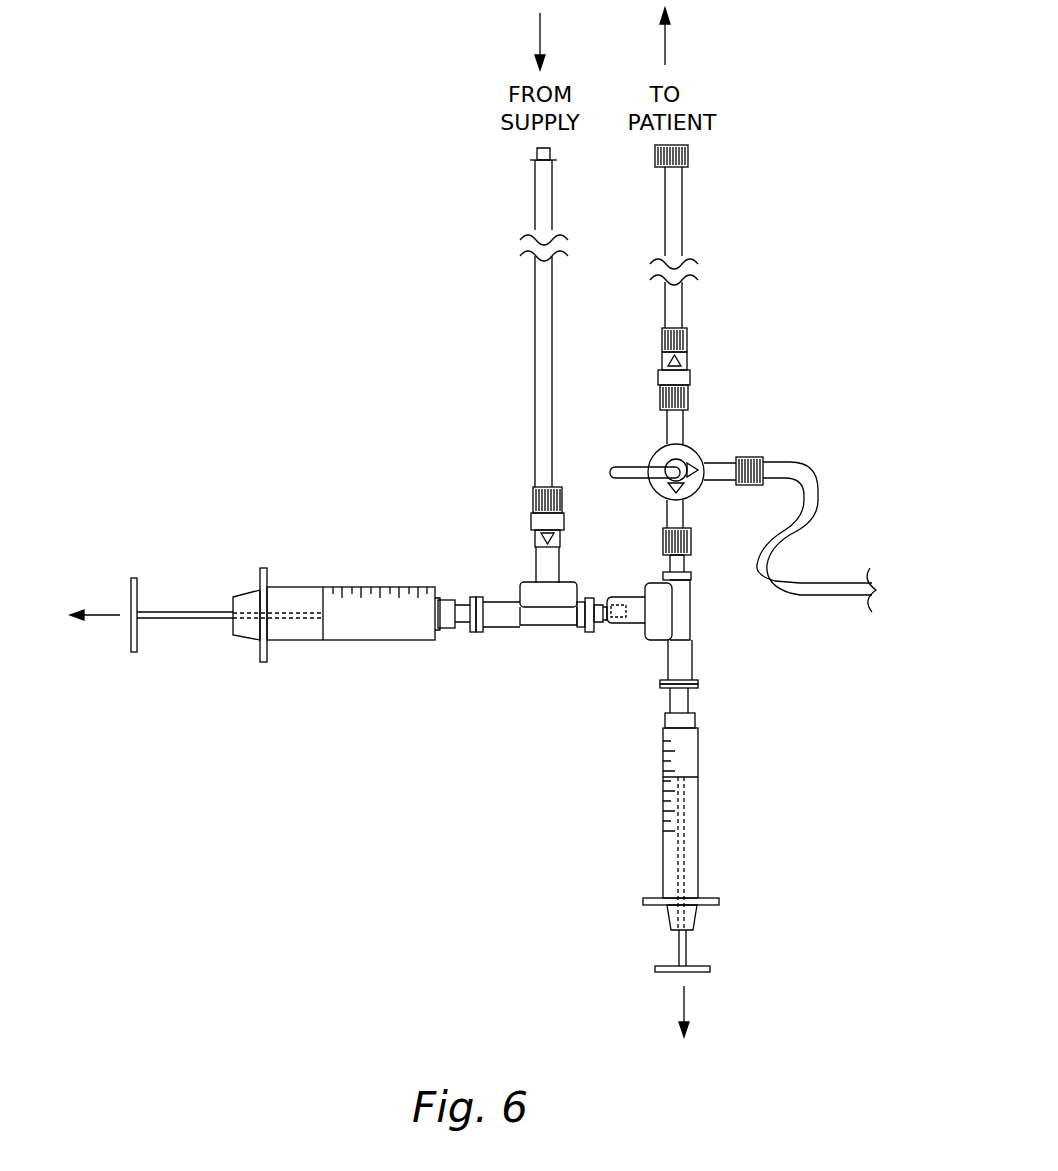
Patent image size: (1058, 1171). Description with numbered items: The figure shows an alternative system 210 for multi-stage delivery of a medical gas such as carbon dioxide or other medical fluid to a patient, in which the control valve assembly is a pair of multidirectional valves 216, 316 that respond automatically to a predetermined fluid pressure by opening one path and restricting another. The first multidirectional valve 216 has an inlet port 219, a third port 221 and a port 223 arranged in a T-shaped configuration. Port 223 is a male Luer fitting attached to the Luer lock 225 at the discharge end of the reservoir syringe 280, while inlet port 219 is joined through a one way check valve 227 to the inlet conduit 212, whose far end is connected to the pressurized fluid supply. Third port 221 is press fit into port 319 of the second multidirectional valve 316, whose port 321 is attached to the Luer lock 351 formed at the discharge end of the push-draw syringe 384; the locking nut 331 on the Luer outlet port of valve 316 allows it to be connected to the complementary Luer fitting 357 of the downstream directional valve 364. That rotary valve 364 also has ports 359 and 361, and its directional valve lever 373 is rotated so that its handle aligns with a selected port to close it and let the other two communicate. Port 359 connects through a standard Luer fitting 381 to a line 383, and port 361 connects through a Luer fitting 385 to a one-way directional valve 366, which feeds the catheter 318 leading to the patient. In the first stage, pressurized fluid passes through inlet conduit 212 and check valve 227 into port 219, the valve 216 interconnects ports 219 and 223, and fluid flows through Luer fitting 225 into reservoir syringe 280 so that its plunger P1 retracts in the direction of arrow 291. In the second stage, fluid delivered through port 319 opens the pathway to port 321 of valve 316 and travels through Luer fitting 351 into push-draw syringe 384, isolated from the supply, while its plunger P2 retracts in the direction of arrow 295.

The system 210 is at (282, 205).
The inlet conduit 212 is at (535, 338).
The multidirectional valve 216 is at (542, 628).
The inlet port 219 is at (535, 566).
The third port 221 is at (602, 628).
The port 223 is at (453, 640).
The Luer lock 225 is at (447, 597).
The one way check valve 227 is at (532, 532).
The reservoir syringe 280 is at (305, 642).
The arrow 291 is at (105, 612).
The arrow 295 is at (687, 1003).
The multidirectional valve 316 is at (690, 612).
The catheter 318 is at (686, 292).
The port 319 is at (640, 597).
The port 321 is at (692, 700).
The locking nut 331 is at (692, 543).
The Luer lock 351 is at (697, 722).
The Luer fitting 357 is at (686, 506).
The port 359 is at (718, 462).
The port 361 is at (663, 425).
The downstream directional valve 364 is at (694, 443).
The one-way directional valve 366 is at (660, 362).
The directional valve lever 373 is at (631, 466).
The Luer fitting 381 is at (752, 457).
The line 383 is at (828, 585).
The push-draw syringe 384 is at (700, 858).
The Luer fitting 385 is at (692, 375).
The plunger P1 is at (136, 592).
The plunger P2 is at (668, 972).